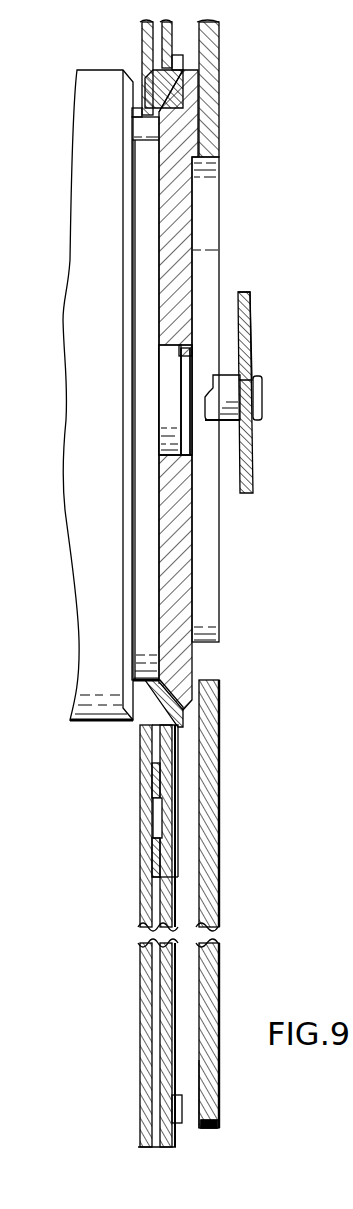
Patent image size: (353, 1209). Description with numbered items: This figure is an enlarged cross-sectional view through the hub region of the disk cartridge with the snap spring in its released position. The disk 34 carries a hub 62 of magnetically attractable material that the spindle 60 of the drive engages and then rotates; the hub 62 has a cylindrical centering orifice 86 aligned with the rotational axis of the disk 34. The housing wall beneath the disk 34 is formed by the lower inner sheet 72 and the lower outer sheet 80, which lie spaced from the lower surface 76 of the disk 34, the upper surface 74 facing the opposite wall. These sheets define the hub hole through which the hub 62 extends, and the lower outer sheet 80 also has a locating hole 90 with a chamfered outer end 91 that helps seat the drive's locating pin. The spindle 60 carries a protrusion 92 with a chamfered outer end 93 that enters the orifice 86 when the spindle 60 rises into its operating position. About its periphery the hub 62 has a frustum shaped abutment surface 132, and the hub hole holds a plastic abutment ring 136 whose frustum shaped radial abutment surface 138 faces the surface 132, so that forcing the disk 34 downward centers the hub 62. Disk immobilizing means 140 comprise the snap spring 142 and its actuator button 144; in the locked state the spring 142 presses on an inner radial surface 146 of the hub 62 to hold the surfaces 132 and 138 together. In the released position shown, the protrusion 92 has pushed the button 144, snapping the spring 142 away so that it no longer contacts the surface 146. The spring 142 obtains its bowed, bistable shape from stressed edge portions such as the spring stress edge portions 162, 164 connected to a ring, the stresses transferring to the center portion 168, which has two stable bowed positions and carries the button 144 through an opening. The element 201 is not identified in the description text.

The disk 34 is at (219, 895).
The spindle 60 is at (143, 240).
The hub 62 is at (178, 545).
The lower inner sheet 72 is at (163, 1078).
The upper surface of the disk 74 is at (222, 915).
The lower surface of the disk 76 is at (200, 1088).
The lower outer sheet 80 is at (135, 905).
The centering orifice 86 is at (178, 350).
The locating hole 90 is at (160, 812).
The chamfered outer end 91 is at (155, 840).
The protrusion 92 is at (163, 438).
The chamfered outer end 93 is at (181, 408).
The frustum shaped abutment surface 132 is at (190, 72).
The plastic abutment ring 136 is at (183, 62).
The frustum shaped radial abutment surface 138 is at (165, 92).
The disk immobilizing means 140 is at (150, 700).
The snap spring 142 is at (253, 450).
The actuator button 144 is at (230, 378).
The inner radial surface 146 is at (195, 585).
The spring stress edge portion 162 is at (204, 1118).
The spring stress edge portion 164 is at (182, 1122).
The center portion 168 is at (256, 352).
The clamp knob 201 is at (205, 418).